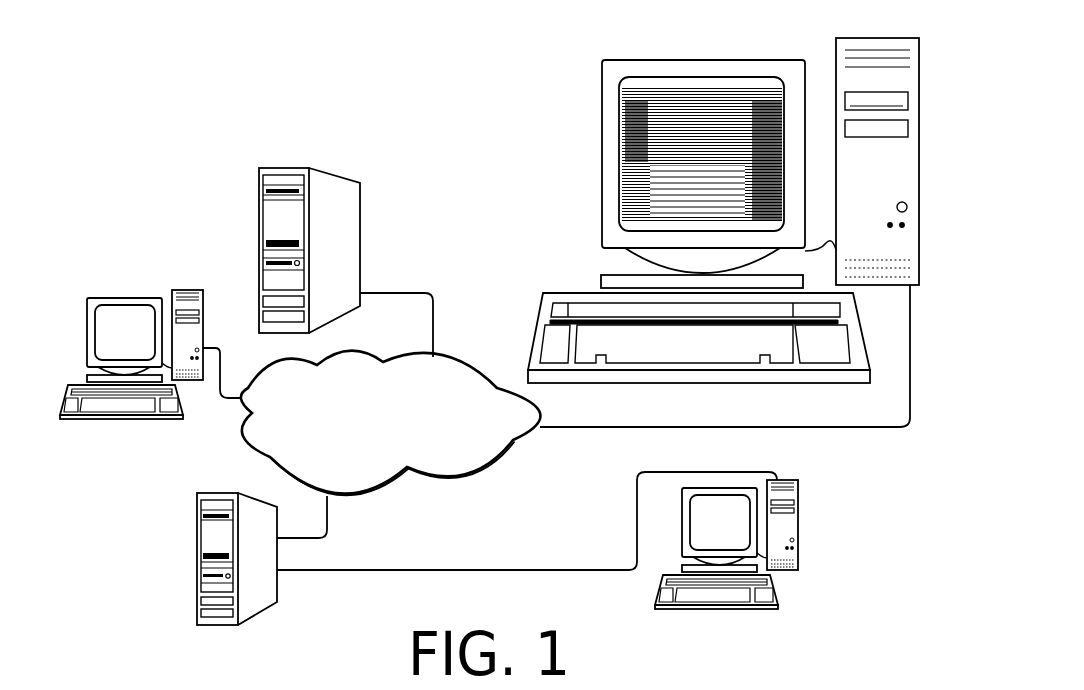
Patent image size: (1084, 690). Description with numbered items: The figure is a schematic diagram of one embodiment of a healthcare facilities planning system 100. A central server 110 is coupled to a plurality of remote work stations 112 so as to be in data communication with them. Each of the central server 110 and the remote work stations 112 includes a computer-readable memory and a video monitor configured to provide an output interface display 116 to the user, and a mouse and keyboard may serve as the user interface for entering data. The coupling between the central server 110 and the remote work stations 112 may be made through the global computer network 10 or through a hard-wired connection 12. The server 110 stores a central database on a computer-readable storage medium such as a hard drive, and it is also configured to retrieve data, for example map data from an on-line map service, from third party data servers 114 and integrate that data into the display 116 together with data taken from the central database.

The healthcare facilities planning system 100 is at (222, 157).
The global computer network 10 is at (368, 332).
The hard-wired connection 12 is at (413, 570).
The central server 110 is at (222, 493).
The remote work stations 112 is at (870, 37).
The third party data servers 114 is at (382, 222).
The output interface display 116 is at (623, 110).